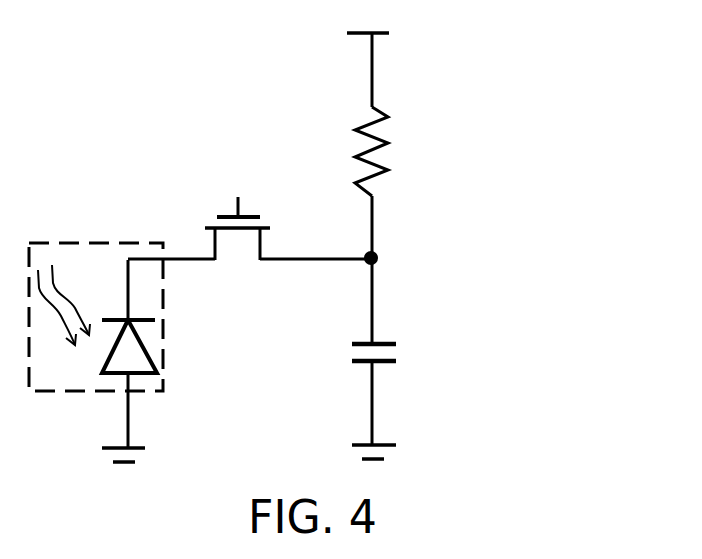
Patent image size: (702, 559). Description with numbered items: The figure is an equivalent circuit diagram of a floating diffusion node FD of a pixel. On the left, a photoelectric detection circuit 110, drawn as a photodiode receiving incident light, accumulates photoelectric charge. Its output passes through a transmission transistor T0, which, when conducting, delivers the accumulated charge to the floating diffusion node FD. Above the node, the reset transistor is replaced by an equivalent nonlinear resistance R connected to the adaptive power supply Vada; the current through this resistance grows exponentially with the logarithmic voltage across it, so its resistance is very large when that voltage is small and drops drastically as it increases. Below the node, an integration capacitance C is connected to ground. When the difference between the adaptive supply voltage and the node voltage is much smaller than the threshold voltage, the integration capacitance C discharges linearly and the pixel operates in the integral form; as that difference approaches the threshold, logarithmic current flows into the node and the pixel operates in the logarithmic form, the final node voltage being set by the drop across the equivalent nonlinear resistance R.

The photoelectric detection circuit 110 is at (163, 357).
The transmission transistor T0 is at (199, 228).
The floating diffusion node FD is at (319, 241).
The integration capacitance C is at (365, 355).
The equivalent nonlinear resistance R is at (447, 179).
The adaptive power supply Vada is at (361, 53).